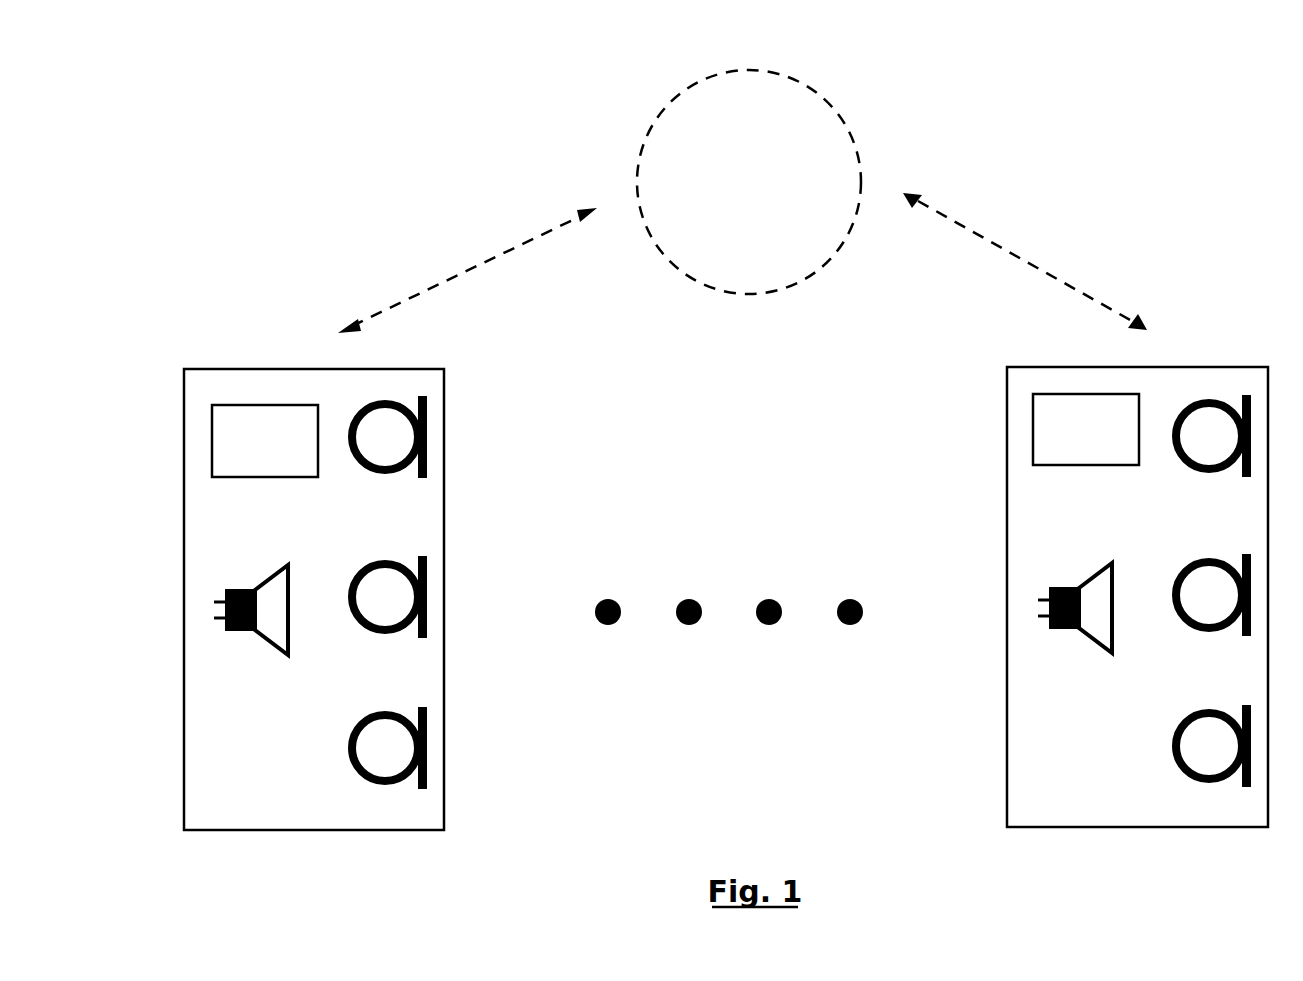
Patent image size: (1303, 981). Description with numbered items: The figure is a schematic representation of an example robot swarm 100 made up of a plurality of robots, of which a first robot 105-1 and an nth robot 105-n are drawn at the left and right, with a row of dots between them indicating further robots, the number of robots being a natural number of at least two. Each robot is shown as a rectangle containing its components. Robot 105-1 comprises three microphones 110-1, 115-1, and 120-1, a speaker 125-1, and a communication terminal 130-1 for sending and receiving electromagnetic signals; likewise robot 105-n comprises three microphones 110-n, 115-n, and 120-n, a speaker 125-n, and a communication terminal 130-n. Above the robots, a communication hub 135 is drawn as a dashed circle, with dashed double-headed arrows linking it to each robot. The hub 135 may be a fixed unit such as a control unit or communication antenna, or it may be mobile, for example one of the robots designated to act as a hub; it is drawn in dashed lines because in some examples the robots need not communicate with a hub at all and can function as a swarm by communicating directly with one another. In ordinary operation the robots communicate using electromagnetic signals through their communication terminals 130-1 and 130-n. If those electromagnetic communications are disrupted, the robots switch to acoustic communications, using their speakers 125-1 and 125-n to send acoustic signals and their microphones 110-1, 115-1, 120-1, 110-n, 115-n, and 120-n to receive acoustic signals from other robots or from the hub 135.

The robot swarm 100 is at (265, 96).
The communication hub 135 is at (769, 196).
The robot 105-1 is at (280, 872).
The robot 105-n is at (1100, 869).
The communication terminal 130-1 is at (234, 454).
The communication terminal 130-n is at (1118, 442).
The microphone 110-1 is at (354, 505).
The microphone 110-n is at (1177, 502).
The microphone 115-1 is at (354, 664).
The microphone 115-n is at (1177, 662).
The microphone 120-1 is at (354, 815).
The microphone 120-n is at (1177, 813).
The speaker 125-1 is at (231, 687).
The speaker 125-n is at (1054, 685).